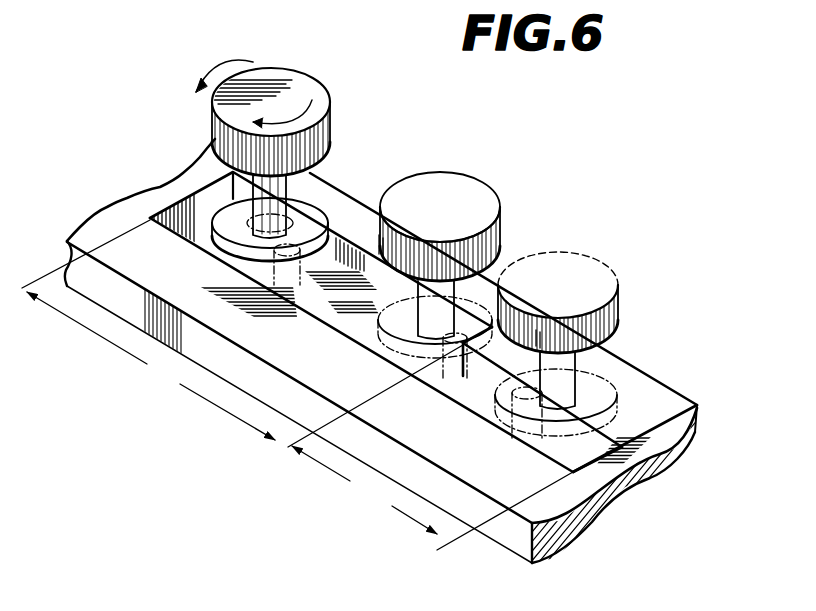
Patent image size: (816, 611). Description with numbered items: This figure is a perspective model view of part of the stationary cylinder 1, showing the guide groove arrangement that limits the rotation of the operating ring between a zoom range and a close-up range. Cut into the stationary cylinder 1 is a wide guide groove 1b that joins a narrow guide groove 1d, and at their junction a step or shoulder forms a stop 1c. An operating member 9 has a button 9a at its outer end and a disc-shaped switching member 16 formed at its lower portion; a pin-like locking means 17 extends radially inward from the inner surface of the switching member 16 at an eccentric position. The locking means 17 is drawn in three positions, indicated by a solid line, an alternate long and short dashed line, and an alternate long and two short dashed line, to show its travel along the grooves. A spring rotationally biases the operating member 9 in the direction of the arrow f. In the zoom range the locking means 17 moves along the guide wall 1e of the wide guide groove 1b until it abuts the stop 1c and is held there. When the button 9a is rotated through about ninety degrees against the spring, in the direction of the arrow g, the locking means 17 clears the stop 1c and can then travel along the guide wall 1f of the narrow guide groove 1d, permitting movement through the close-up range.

The stationary cylinder 1 is at (115, 218).
The wide guide groove 1b is at (358, 318).
The stop 1c is at (463, 380).
The narrow guide groove 1d is at (588, 464).
The guide wall 1e is at (368, 265).
The guide wall 1f is at (604, 430).
The operating member 9 is at (247, 202).
The button 9a is at (307, 94).
The switching member 16 is at (233, 246).
The locking means 17 is at (300, 285).
The arrow indicating biasing direction f is at (327, 118).
The arrow indicating button rotation direction g is at (248, 60).